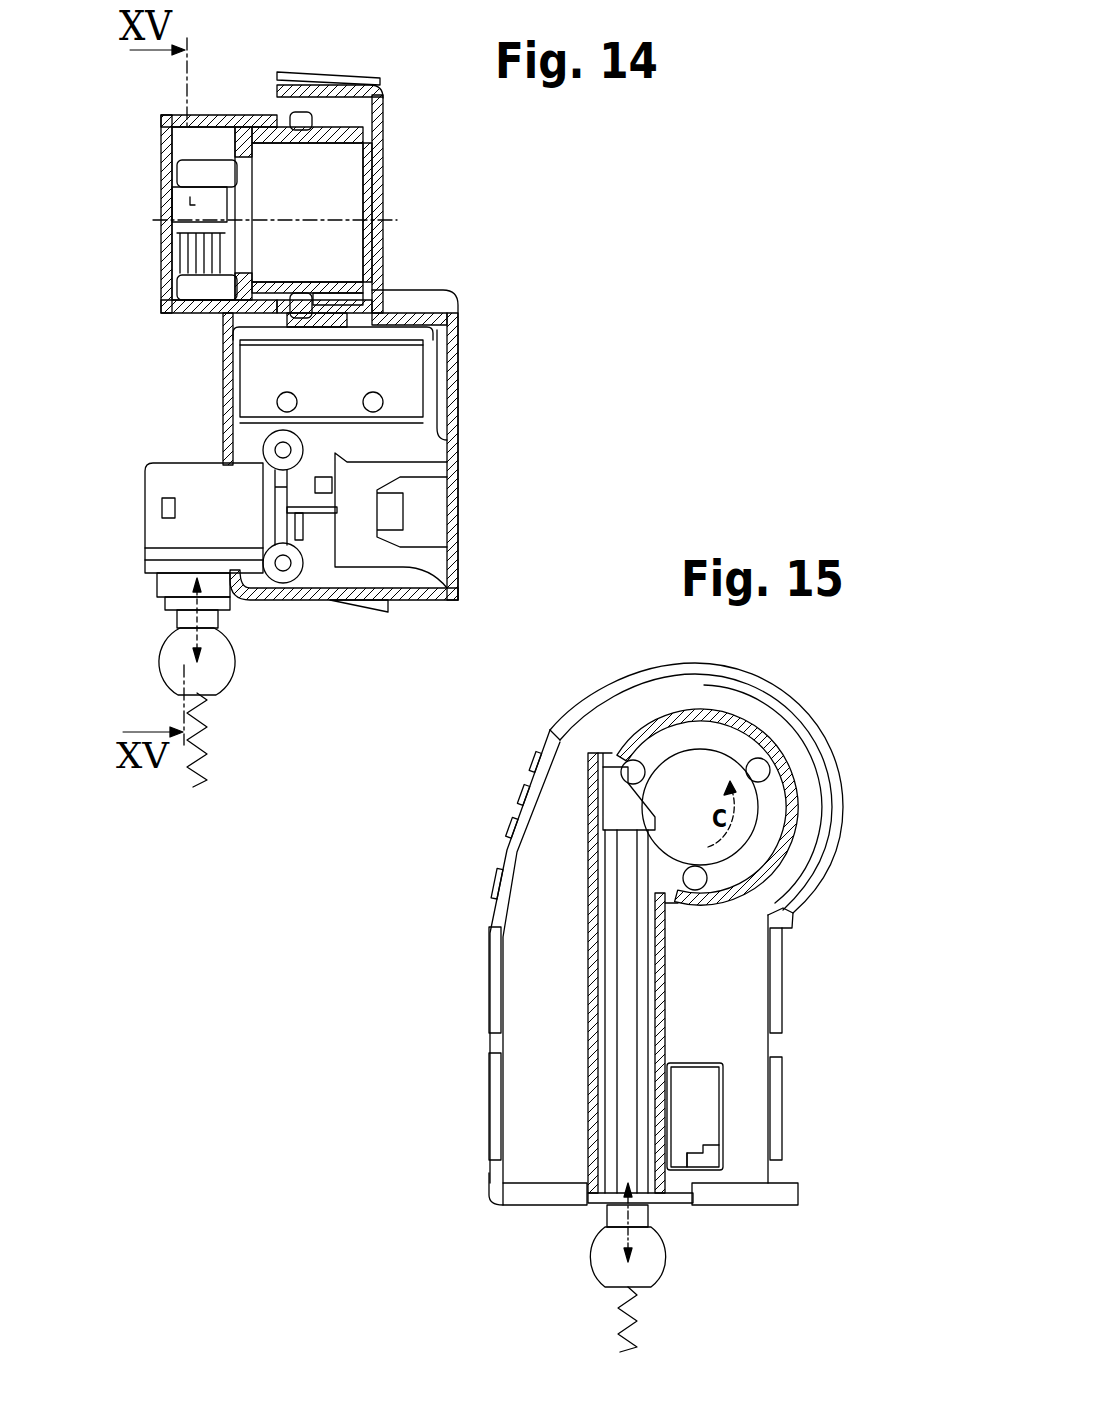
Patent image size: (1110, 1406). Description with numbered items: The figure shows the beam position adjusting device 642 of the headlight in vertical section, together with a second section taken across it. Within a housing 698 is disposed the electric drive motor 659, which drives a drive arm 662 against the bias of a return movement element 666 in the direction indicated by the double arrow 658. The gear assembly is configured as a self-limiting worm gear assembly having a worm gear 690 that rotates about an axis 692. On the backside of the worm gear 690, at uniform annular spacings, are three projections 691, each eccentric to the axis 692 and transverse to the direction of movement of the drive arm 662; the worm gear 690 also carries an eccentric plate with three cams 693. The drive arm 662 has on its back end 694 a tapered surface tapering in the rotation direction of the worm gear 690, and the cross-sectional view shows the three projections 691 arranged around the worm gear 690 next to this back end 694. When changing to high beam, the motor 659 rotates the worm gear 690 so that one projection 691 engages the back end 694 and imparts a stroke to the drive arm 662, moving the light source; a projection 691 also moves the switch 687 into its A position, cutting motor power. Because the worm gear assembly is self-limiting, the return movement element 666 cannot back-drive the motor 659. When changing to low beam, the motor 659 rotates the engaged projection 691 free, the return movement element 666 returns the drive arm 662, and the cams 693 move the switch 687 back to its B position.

In FIG. 14, the beam position adjusting device 642 is at (492, 393).
In FIG. 15, the beam position adjusting device 642 is at (803, 969).
In FIG. 14, the double arrow 658 is at (235, 659).
In FIG. 15, the double arrow 658 is at (668, 1259).
In FIG. 14, the electric drive motor 659 is at (385, 440).
In FIG. 14, the drive arm 662 is at (173, 651).
In FIG. 15, the drive arm 662 is at (603, 1252).
In FIG. 14, the return movement element 666 is at (207, 727).
In FIG. 15, the return movement element 666 is at (637, 1302).
In FIG. 14, the switch 687 is at (390, 370).
In FIG. 14, the worm gear 690 is at (352, 124).
In FIG. 15, the worm gear 690 is at (763, 837).
In FIG. 14, the projection 691 is at (192, 174).
In FIG. 15, the projection 691 is at (693, 866).
In FIG. 14, the axis 692 is at (387, 220).
In FIG. 14, the cam 693 is at (303, 122).
In FIG. 14, the back end 694 is at (195, 204).
In FIG. 15, the back end 694 is at (662, 805).
In FIG. 14, the housing 698 is at (327, 592).
In FIG. 15, the housing 698 is at (660, 998).